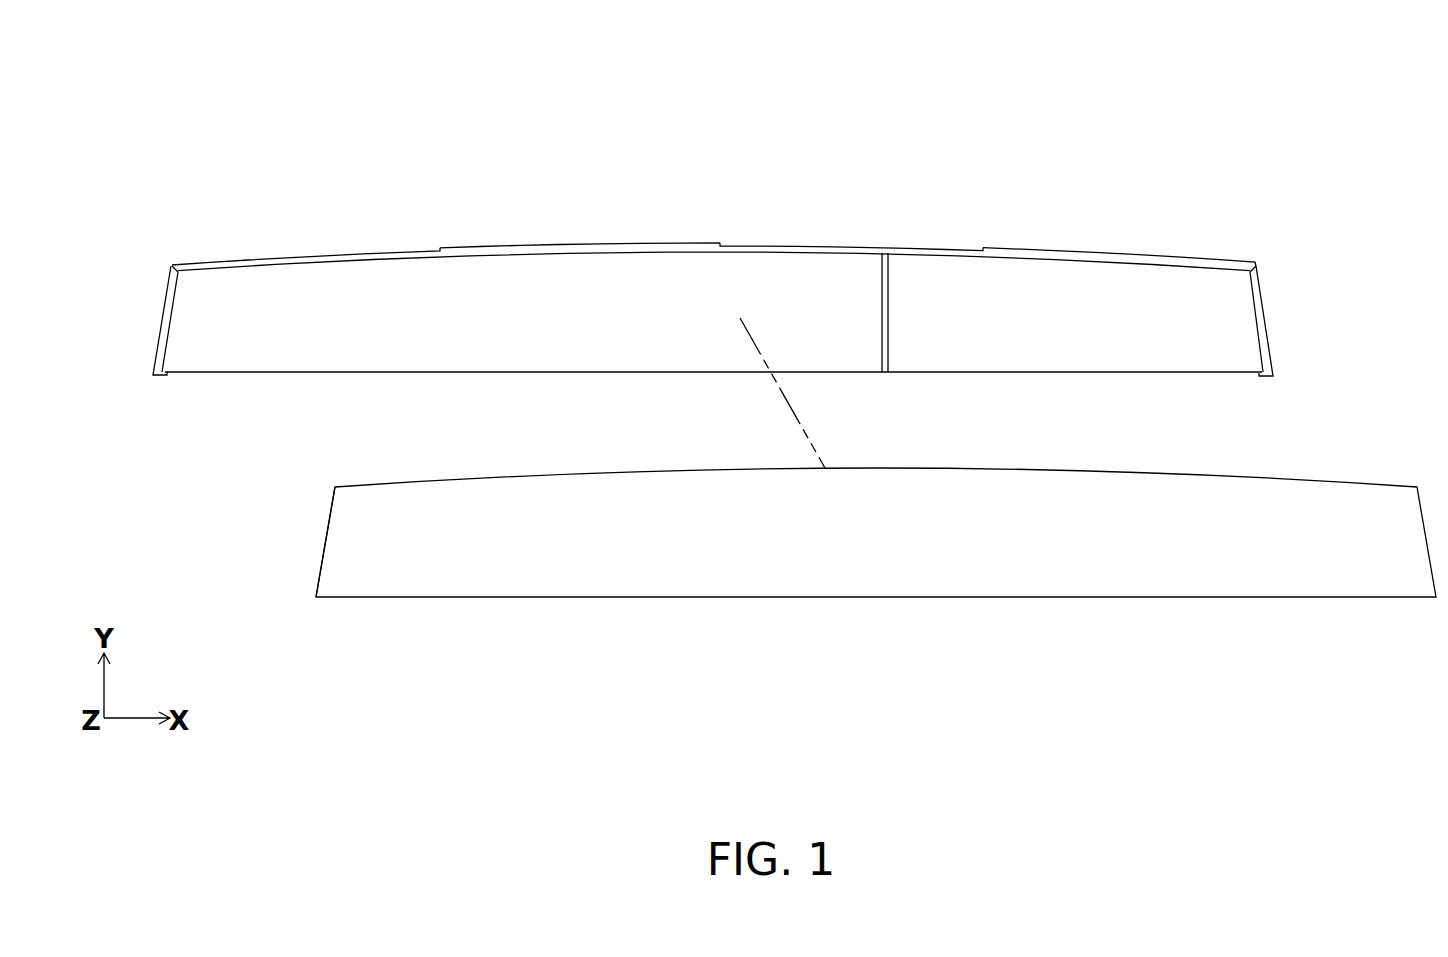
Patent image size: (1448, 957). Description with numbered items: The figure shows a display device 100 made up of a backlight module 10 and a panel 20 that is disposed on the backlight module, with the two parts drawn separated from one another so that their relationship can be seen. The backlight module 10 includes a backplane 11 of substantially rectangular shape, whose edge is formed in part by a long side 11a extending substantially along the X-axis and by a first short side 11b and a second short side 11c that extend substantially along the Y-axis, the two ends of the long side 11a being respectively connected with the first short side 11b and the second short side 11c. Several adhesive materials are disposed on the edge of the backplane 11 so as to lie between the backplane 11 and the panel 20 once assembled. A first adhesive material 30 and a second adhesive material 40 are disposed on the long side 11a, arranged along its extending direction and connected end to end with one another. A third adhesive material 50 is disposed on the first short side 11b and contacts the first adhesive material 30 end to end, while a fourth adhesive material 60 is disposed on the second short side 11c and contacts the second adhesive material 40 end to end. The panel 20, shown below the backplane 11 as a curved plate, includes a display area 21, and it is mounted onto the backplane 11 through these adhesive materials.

The display device 100 is at (120, 81).
The backlight module 10 is at (713, 190).
The backplane 11 is at (507, 275).
The long side 11a is at (355, 262).
The first short side 11b is at (1262, 350).
The second short side 11c is at (168, 347).
The first adhesive material 30 is at (603, 250).
The second adhesive material 40 is at (257, 260).
The third adhesive material 50 is at (1258, 313).
The fourth adhesive material 60 is at (170, 302).
The panel 20 is at (376, 642).
The display area 21 is at (340, 545).